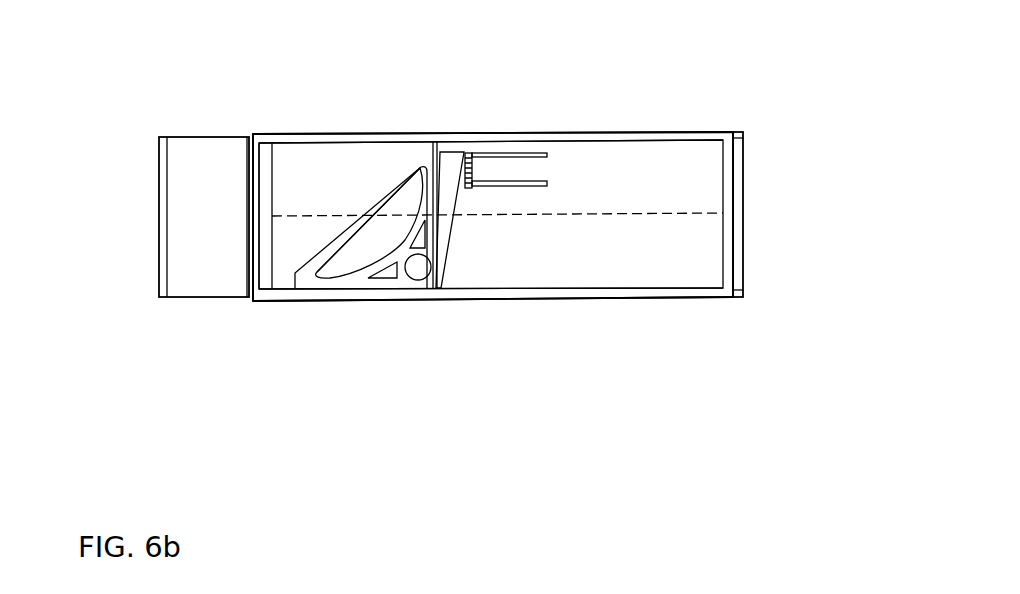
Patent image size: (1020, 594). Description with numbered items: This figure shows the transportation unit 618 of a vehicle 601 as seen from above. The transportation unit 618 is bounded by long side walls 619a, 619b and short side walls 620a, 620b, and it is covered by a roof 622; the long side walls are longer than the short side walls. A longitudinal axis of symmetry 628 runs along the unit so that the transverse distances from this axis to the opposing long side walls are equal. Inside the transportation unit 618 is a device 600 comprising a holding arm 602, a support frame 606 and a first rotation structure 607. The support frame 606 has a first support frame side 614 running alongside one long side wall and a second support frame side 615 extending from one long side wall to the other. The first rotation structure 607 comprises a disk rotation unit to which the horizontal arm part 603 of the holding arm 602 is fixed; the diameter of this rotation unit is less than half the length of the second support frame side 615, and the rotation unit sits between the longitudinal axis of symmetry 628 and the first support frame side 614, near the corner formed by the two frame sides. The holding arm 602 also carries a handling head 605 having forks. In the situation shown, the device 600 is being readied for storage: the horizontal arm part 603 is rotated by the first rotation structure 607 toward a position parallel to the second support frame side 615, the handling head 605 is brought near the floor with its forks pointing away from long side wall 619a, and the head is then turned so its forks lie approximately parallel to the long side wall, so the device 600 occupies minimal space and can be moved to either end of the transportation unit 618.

The device 600 is at (402, 210).
The vehicle 601 is at (193, 226).
The holding arm 602 is at (462, 199).
The horizontal arm part 603 is at (444, 157).
The handling head 605 is at (498, 187).
The support frame 606 is at (375, 188).
The first rotation structure 607 is at (416, 272).
The first support frame side 614 is at (330, 289).
The second support frame side 615 is at (450, 172).
The transportation unit 618 is at (582, 131).
The long side wall 619a is at (552, 132).
The long side wall 619b is at (550, 300).
The short side wall 620a is at (247, 185).
The short side wall 620b is at (745, 215).
The roof 622 is at (637, 181).
The longitudinal axis of symmetry 628 is at (622, 217).